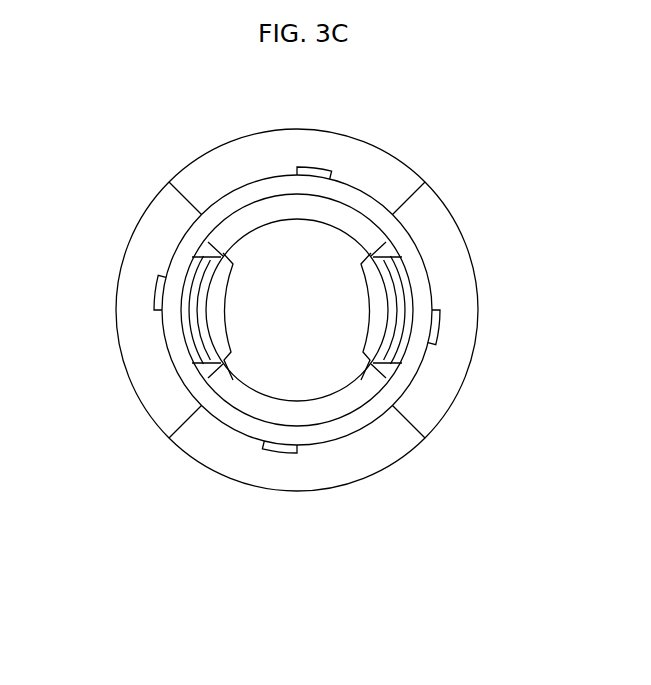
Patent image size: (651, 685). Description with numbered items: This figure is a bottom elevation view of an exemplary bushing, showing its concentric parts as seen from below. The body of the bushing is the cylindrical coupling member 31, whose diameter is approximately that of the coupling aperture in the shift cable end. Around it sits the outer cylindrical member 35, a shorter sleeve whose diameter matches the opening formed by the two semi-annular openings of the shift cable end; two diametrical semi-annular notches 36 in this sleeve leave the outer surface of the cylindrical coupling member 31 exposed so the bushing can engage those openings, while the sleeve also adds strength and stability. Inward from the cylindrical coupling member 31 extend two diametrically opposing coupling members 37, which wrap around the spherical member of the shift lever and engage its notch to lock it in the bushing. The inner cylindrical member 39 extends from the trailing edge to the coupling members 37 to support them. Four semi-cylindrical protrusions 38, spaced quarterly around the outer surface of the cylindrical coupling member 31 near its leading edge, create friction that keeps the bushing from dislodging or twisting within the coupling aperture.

The cylindrical coupling member 31 is at (180, 352).
The outer cylindrical member 35 is at (382, 157).
The semi-annular notches 36 is at (443, 385).
The coupling members 37 is at (215, 298).
The semi-cylindrical protrusions 38 is at (442, 328).
The inner cylindrical member 39 is at (250, 218).